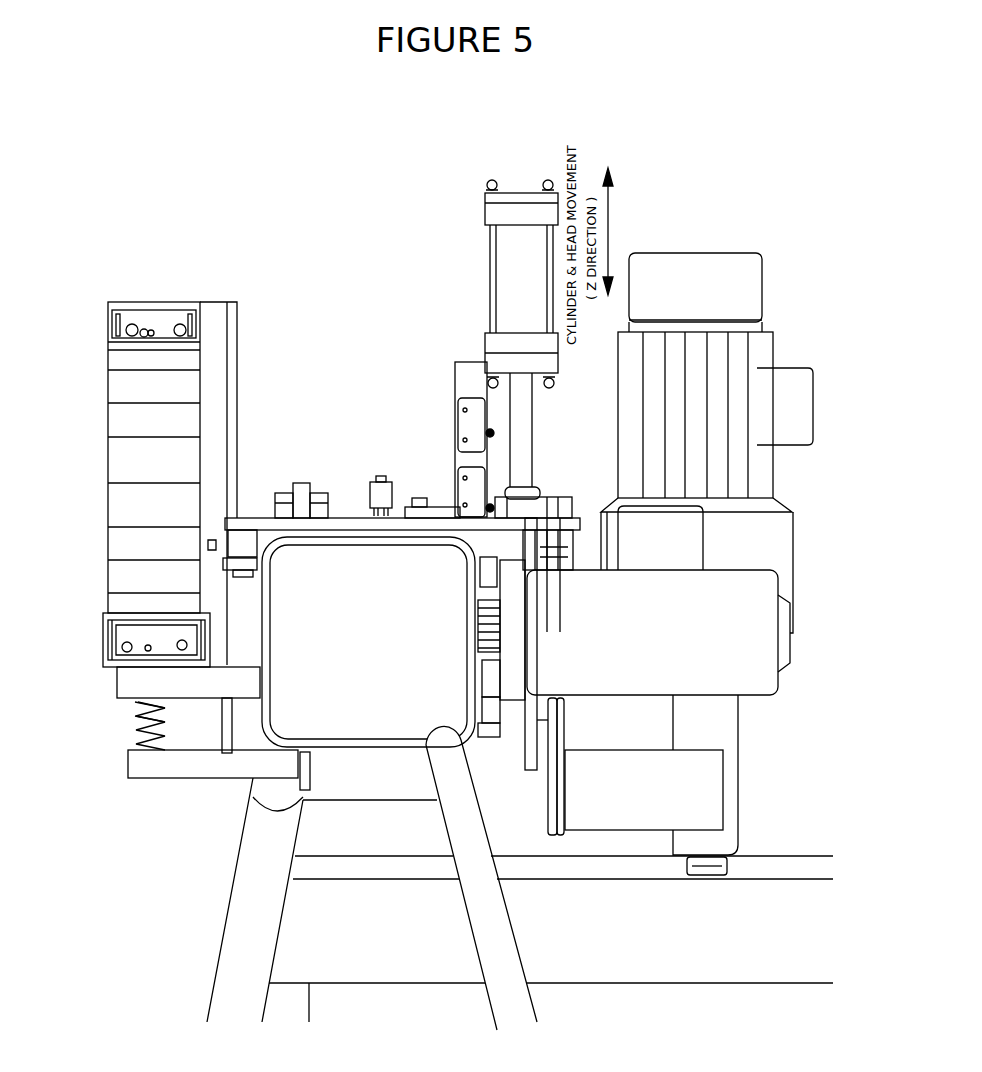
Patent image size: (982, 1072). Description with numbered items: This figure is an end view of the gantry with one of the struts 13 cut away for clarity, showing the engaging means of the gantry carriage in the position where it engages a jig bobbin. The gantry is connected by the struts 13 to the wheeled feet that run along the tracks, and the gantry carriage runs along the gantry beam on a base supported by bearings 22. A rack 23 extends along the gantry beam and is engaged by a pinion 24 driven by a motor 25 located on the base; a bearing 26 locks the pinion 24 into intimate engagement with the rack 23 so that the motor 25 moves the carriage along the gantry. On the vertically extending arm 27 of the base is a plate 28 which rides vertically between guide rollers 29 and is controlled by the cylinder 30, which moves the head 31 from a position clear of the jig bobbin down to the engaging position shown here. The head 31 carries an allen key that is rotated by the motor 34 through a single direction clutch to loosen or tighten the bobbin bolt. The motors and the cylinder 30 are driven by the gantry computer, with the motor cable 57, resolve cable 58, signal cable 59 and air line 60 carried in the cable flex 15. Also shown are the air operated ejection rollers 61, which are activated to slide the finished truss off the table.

The struts 13 is at (262, 927).
The cable flex 15 is at (135, 460).
The bearings 22 is at (300, 483).
The rack 23 is at (487, 603).
The pinion 24 is at (475, 647).
The motor 25 is at (728, 663).
The bearing 26 is at (490, 575).
The vertically extending arm 27 is at (538, 773).
The plate 28 is at (556, 490).
The guide rollers 29 is at (558, 740).
The cylinder 30 is at (515, 253).
The head 31 is at (727, 795).
The motor 34 is at (765, 345).
The motor cable 57 is at (122, 645).
The resolve cable 58 is at (130, 657).
The signal cable 59 is at (145, 650).
The air line 60 is at (183, 655).
The ejection rollers 61 is at (383, 480).